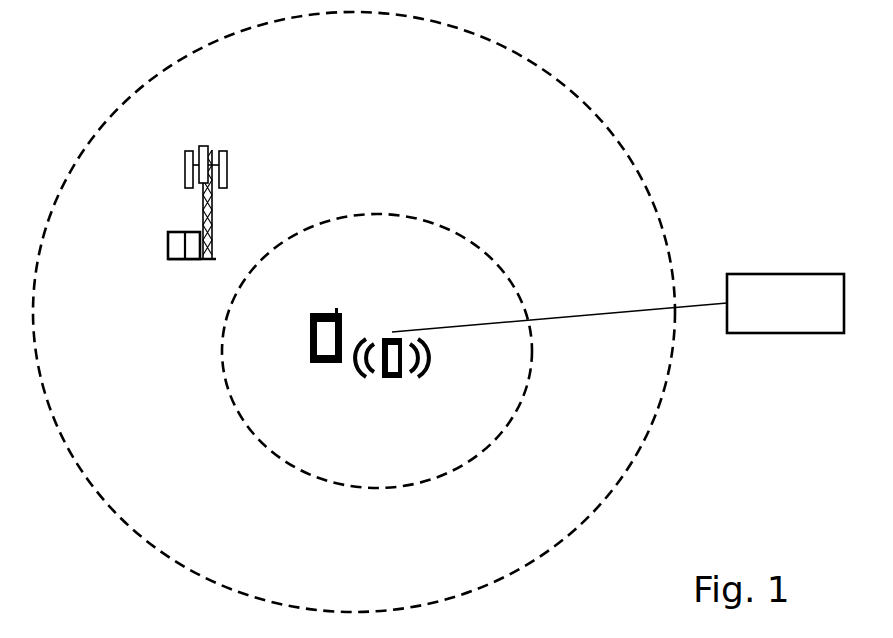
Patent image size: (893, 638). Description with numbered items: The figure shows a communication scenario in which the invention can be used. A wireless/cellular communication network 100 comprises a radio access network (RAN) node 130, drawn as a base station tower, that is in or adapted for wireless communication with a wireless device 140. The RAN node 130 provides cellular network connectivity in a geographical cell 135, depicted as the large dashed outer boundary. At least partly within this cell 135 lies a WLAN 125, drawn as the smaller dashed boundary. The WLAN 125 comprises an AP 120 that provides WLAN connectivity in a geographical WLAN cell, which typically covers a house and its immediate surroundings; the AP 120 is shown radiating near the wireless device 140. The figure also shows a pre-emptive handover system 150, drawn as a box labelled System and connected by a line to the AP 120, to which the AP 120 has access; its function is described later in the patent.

The wireless/cellular communication network 100 is at (168, 28).
The AP 120 is at (392, 378).
The WLAN 125 is at (487, 257).
The radio access network (RAN) node 130 is at (208, 143).
The geographical cell 135 is at (542, 70).
The wireless device 140 is at (336, 308).
The pre-emptive handover system 150 is at (782, 274).